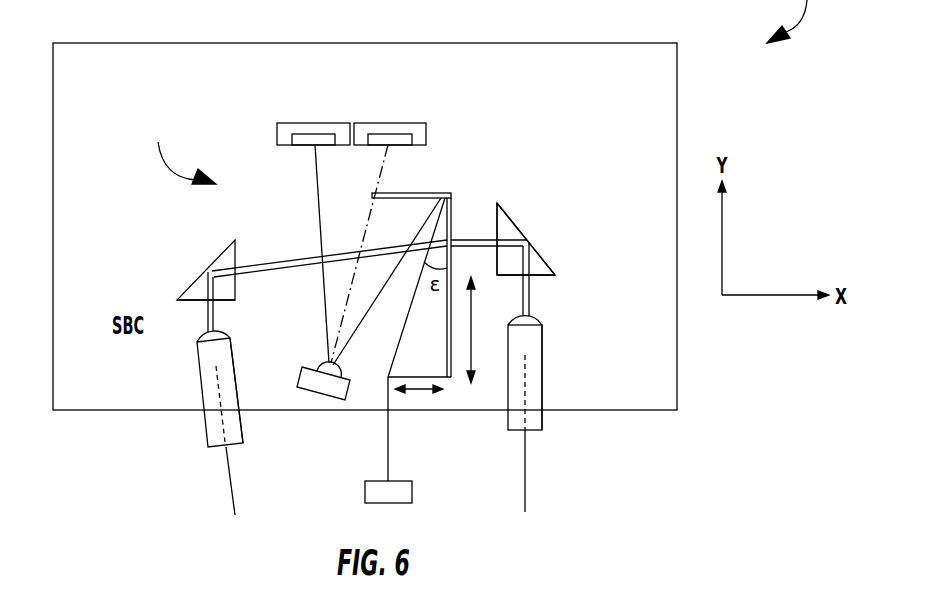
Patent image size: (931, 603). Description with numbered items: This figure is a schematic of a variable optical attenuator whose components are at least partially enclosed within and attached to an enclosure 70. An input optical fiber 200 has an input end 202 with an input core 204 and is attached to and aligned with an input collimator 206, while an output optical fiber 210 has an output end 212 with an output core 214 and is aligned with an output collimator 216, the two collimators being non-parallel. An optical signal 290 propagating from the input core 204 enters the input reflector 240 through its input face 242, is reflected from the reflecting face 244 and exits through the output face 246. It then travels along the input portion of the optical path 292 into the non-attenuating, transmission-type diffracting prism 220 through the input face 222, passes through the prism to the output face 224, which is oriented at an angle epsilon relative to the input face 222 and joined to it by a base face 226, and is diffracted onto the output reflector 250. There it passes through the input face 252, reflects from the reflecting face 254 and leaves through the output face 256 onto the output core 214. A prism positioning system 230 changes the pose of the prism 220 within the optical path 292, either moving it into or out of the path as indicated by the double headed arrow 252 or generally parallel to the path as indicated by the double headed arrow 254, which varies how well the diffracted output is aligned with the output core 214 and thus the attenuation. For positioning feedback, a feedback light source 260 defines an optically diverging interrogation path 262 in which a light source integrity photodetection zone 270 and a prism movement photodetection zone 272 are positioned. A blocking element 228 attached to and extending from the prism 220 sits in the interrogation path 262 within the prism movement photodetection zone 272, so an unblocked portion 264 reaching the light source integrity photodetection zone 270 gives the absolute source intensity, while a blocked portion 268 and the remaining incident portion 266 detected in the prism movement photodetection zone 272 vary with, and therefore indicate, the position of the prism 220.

The enclosure 70 is at (450, 43).
The input optical fiber 200 is at (527, 453).
The input end 202 is at (527, 353).
The input core 204 is at (523, 353).
The input collimator 206 is at (543, 393).
The output optical fiber 210 is at (227, 461).
The output end 212 is at (217, 370).
The output core 214 is at (215, 367).
The output collimator 216 is at (243, 405).
The non-attenuating, transmission-type diffracting prism 220 is at (380, 385).
The input face 222 is at (451, 230).
The output face 224 is at (396, 328).
The base face 226 is at (450, 380).
The blocking element 228 is at (423, 192).
The prism positioning system 230 is at (412, 502).
The input reflector 240 is at (548, 265).
The input face 242 is at (550, 277).
The reflecting face 244 is at (527, 237).
The output face 246 is at (497, 235).
The output reflector 250 is at (178, 292).
The input face 252 is at (236, 258).
The reflecting face 254 is at (208, 270).
The output face 256 is at (224, 302).
The feedback light source 260 is at (312, 410).
The optically diverging interrogation path 262 is at (180, 149).
The unblocked portion 264 is at (319, 207).
The incident portion 266 is at (388, 162).
The blocked portion 268 is at (412, 229).
The light source integrity photodetection zone 270 is at (286, 123).
The prism movement photodetection zone 272 is at (418, 123).
The optical signal 290 is at (490, 330).
The input portion of the optical path 292 is at (470, 241).